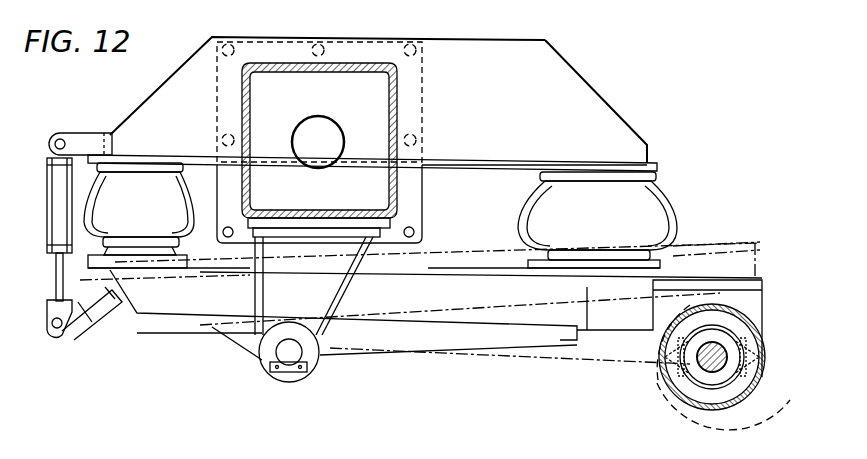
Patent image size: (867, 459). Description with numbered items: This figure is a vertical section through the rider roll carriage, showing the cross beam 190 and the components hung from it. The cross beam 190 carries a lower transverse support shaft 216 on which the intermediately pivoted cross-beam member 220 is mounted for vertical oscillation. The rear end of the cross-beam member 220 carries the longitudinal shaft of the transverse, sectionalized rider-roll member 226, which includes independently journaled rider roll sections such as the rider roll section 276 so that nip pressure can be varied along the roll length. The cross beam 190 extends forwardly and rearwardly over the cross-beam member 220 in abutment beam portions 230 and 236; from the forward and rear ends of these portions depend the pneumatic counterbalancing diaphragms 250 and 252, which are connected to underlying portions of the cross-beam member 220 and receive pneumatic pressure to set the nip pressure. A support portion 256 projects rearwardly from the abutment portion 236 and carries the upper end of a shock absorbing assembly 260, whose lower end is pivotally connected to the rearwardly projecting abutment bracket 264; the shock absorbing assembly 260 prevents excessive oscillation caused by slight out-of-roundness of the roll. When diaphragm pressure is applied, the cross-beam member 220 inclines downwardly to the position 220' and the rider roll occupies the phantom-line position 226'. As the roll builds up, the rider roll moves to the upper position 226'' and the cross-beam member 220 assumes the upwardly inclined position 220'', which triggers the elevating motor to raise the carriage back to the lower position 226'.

The cross beam 190 is at (293, 63).
The abutment beam portion 236 is at (152, 108).
The abutment beam portion 230 is at (606, 100).
The support portion 256 is at (86, 133).
The shock absorbing assembly 260 is at (47, 231).
The abutment bracket 264 is at (100, 305).
The pneumatic counterbalancing diaphragm 252 is at (148, 215).
The pneumatic counterbalancing diaphragm 250 is at (605, 225).
The cross-beam member 220 is at (425, 322).
The downwardly inclined cross-beam position 220' is at (385, 334).
The upwardly inclined cross-beam position 220'' is at (436, 265).
The transverse support shaft 216 is at (282, 355).
The rider-roll member 226 is at (681, 357).
The rider roll lower position 226' is at (704, 376).
The rider roll upper position 226'' is at (726, 244).
The rider roll section 276 is at (700, 404).